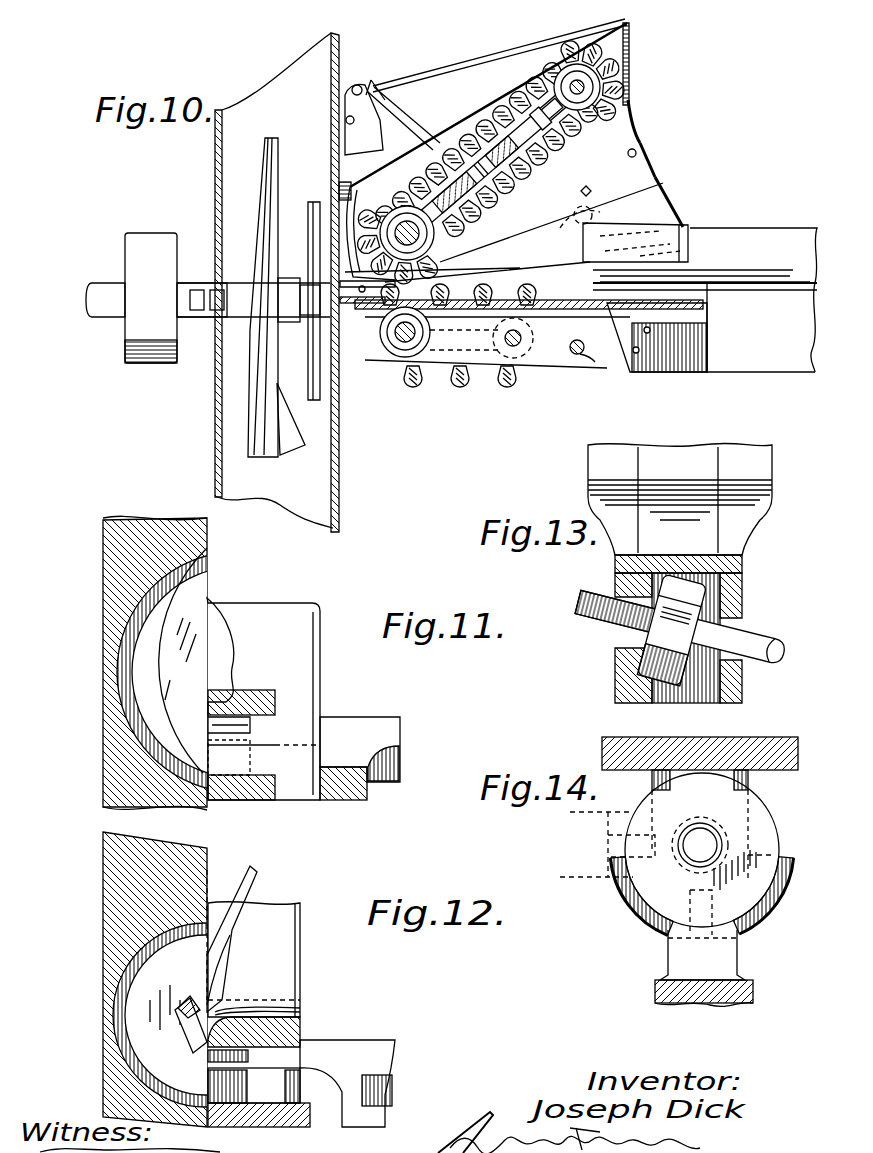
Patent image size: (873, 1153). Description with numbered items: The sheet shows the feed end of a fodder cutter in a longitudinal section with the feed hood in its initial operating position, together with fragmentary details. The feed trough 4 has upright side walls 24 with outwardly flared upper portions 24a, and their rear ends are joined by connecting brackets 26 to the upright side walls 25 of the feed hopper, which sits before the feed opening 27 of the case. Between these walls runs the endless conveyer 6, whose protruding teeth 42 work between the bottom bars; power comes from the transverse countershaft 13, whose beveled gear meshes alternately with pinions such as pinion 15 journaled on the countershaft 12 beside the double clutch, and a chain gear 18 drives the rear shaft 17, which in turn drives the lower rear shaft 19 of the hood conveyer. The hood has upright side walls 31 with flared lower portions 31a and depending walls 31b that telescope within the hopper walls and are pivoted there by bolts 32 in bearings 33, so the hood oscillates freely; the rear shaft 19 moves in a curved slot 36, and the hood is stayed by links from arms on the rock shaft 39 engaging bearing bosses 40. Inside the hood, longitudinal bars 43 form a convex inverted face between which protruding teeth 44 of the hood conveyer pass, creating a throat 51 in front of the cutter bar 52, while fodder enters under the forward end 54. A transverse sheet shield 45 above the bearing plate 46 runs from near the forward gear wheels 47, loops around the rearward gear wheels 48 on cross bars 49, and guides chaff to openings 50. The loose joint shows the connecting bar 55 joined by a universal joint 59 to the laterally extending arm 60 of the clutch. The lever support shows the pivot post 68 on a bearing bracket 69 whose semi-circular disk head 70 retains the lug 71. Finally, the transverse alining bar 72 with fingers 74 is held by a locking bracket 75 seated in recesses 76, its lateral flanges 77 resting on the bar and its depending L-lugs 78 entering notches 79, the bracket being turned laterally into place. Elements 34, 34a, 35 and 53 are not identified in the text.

In FIG. 10, the feed trough 4 is at (688, 382).
In FIG. 10, the endless conveyer 6 is at (559, 376).
In FIG. 10, the countershaft 12 is at (690, 302).
In FIG. 10, the transverse countershaft 13 is at (526, 336).
In FIG. 10, the pinion 15 is at (364, 289).
In FIG. 10, the rear shaft of the feed conveyer 17 is at (418, 330).
In FIG. 10, the chain gear 18 is at (440, 332).
In FIG. 10, the lower rear shaft of the feed hood conveyer 19 is at (381, 240).
In FIG. 10, the upright side walls of the feed trough 24 is at (755, 365).
In FIG. 10, the outwardly flared upper portions 24a is at (742, 245).
In FIG. 10, the upright side walls of the feed hopper 25 is at (695, 276).
In FIG. 10, the connecting brackets 26 is at (593, 272).
In FIG. 10, the feed opening 27 is at (277, 282).
In FIG. 10, the upright side walls of the feed hood 31 is at (555, 45).
In FIG. 10, the flared lower portions 31a is at (628, 135).
In FIG. 10, the depending walls 31b is at (652, 162).
In FIG. 10, the bolts 32 is at (594, 215).
In FIG. 10, the bearings 33 is at (584, 191).
In FIG. 10, the link 34 is at (568, 250).
In FIG. 10, the link extension 34a is at (705, 276).
In FIG. 10, the block 35 is at (670, 228).
In FIG. 10, the slot 36 is at (371, 220).
In FIG. 10, the rock shaft 39 is at (385, 118).
In FIG. 10, the bearing bosses 40 is at (460, 170).
In FIG. 10, the protruding teeth 42 is at (470, 392).
In FIG. 11, the protruding teeth 42 is at (305, 702).
In FIG. 12, the protruding teeth 42 is at (290, 958).
In FIG. 10, the laterally spaced longitudinal bars 43 is at (601, 78).
In FIG. 10, the protruding teeth 44 is at (560, 45).
In FIG. 10, the transverse sheet shield 45 is at (496, 160).
In FIG. 10, the bearing plate 46 is at (497, 170).
In FIG. 10, the forward gear wheels 47 is at (584, 84).
In FIG. 10, the rearward gear wheels 48 is at (368, 101).
In FIG. 10, the cross bars 49 is at (545, 130).
In FIG. 10, the openings 50 is at (460, 179).
In FIG. 10, the throat 51 is at (470, 268).
In FIG. 10, the cutter bar 52 is at (383, 328).
In FIG. 10, the stud 53 is at (360, 292).
In FIG. 10, the forward end of the feed hood 54 is at (630, 158).
In FIG. 13, the connecting bar 55 is at (750, 650).
In FIG. 13, the universal joint 59 is at (622, 662).
In FIG. 13, the laterally extending arm 60 is at (700, 462).
In FIG. 14, the pivot post 68 is at (712, 845).
In FIG. 14, the bearing bracket 69 is at (746, 786).
In FIG. 14, the semi-circular disk head 70 is at (758, 908).
In FIG. 14, the lug 71 is at (668, 930).
In FIG. 10, the transverse alining bar 72 is at (362, 307).
In FIG. 11, the transverse alining bar 72 is at (390, 739).
In FIG. 12, the transverse alining bar 72 is at (365, 1058).
In FIG. 11, the fingers 74 is at (352, 794).
In FIG. 12, the fingers 74 is at (346, 1125).
In FIG. 11, the locking bracket 75 is at (212, 579).
In FIG. 12, the locking bracket 75 is at (232, 898).
In FIG. 11, the recesses 76 is at (130, 690).
In FIG. 12, the recesses 76 is at (128, 978).
In FIG. 11, the lateral flanges 77 is at (224, 678).
In FIG. 12, the lateral flanges 77 is at (202, 1003).
In FIG. 11, the depending L-lugs 78 is at (198, 757).
In FIG. 12, the depending L-lugs 78 is at (185, 1070).
In FIG. 11, the notches 79 is at (240, 729).
In FIG. 12, the notches 79 is at (300, 1020).